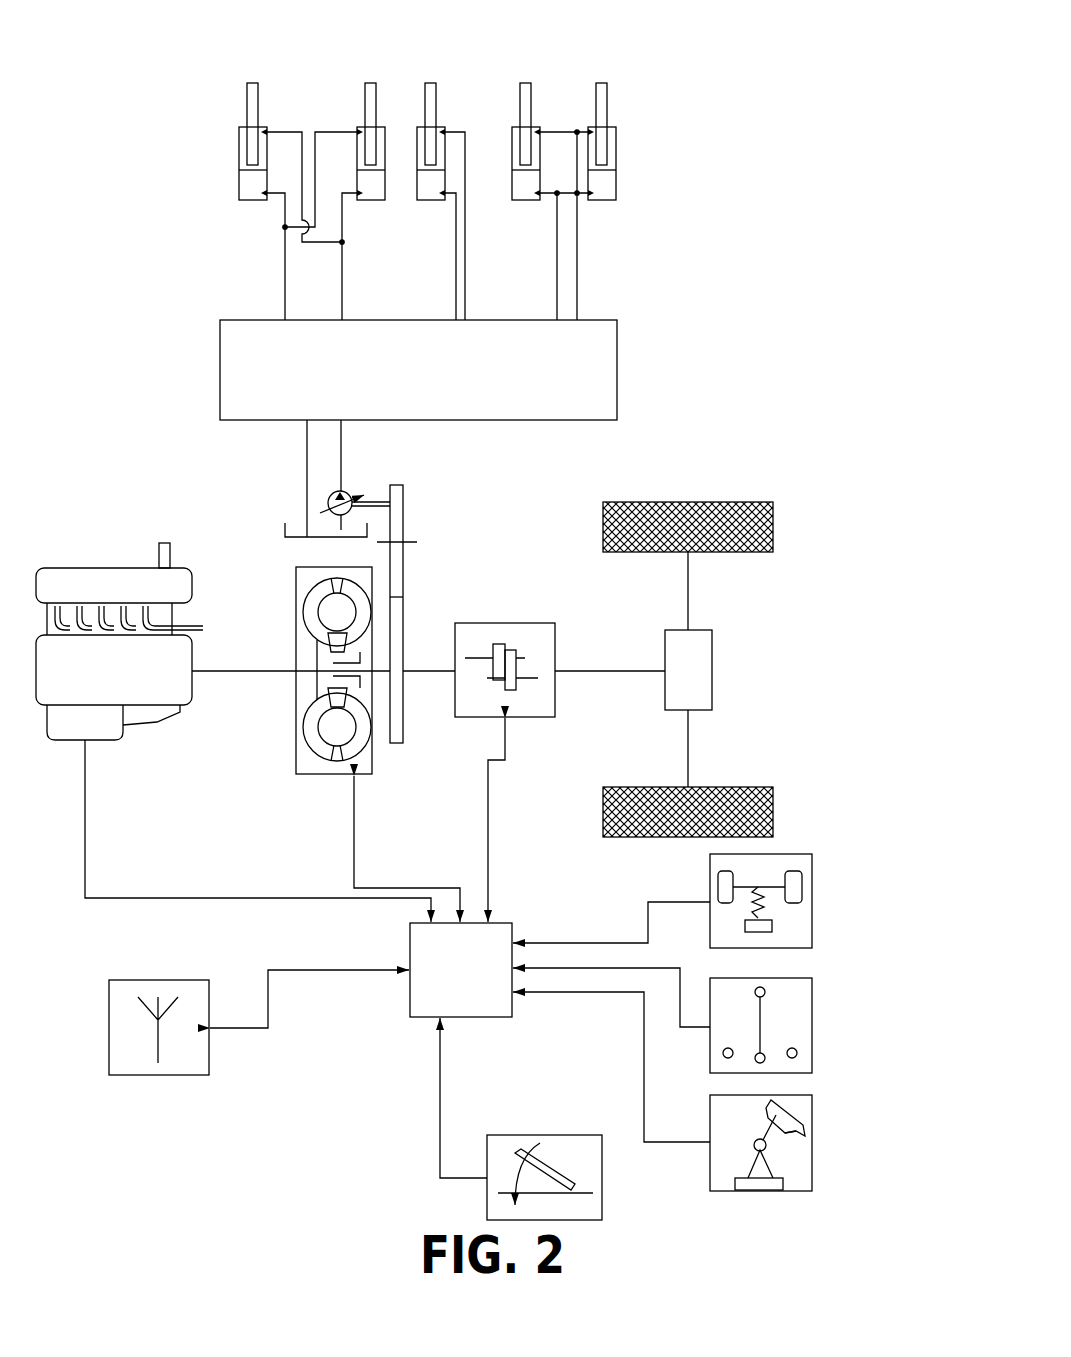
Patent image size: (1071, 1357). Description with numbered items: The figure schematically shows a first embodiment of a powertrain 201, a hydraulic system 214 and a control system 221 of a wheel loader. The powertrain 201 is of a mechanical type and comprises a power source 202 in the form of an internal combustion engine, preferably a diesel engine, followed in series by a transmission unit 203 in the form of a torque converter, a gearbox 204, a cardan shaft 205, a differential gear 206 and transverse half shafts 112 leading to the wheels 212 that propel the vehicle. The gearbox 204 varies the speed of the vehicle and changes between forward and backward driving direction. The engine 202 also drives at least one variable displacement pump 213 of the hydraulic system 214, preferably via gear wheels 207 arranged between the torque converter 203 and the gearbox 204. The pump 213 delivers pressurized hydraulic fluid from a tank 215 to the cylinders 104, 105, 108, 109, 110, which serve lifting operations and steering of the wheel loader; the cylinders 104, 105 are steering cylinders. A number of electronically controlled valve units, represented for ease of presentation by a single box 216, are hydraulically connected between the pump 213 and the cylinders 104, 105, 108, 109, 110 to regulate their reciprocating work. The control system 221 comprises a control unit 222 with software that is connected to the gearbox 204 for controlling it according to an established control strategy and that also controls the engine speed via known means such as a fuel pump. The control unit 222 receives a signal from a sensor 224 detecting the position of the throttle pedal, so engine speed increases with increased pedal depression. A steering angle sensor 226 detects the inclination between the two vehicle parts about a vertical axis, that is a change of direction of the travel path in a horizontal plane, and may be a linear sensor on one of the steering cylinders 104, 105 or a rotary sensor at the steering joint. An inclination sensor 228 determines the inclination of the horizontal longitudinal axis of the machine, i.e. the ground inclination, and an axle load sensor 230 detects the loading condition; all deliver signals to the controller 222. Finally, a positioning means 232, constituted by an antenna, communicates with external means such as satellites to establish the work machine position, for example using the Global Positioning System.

The steering cylinder 104 is at (243, 123).
The steering cylinder 105 is at (362, 123).
The cylinder 108 is at (523, 204).
The cylinder 109 is at (593, 120).
The cylinder 110 is at (443, 120).
The transverse half shafts 112 is at (688, 590).
The powertrain 201 is at (527, 510).
The power source 202 is at (58, 577).
The transmission unit 203 is at (308, 765).
The gearbox 204 is at (468, 627).
The cardan shaft 205 is at (628, 671).
The differential gear 206 is at (712, 670).
The gear wheels 207 is at (413, 577).
The wheels 212 is at (705, 502).
The variable displacement pump 213 is at (329, 497).
The hydraulic system 214 is at (650, 253).
The tank 215 is at (281, 528).
The valve units 216 is at (613, 371).
The control system 221 is at (292, 1110).
The control unit 222 is at (409, 1002).
The sensor 224 is at (507, 1135).
The steering angle sensor 226 is at (812, 1142).
The inclination sensor 228 is at (812, 1027).
The axle load sensor 230 is at (812, 902).
The positioning means 232 is at (138, 1075).